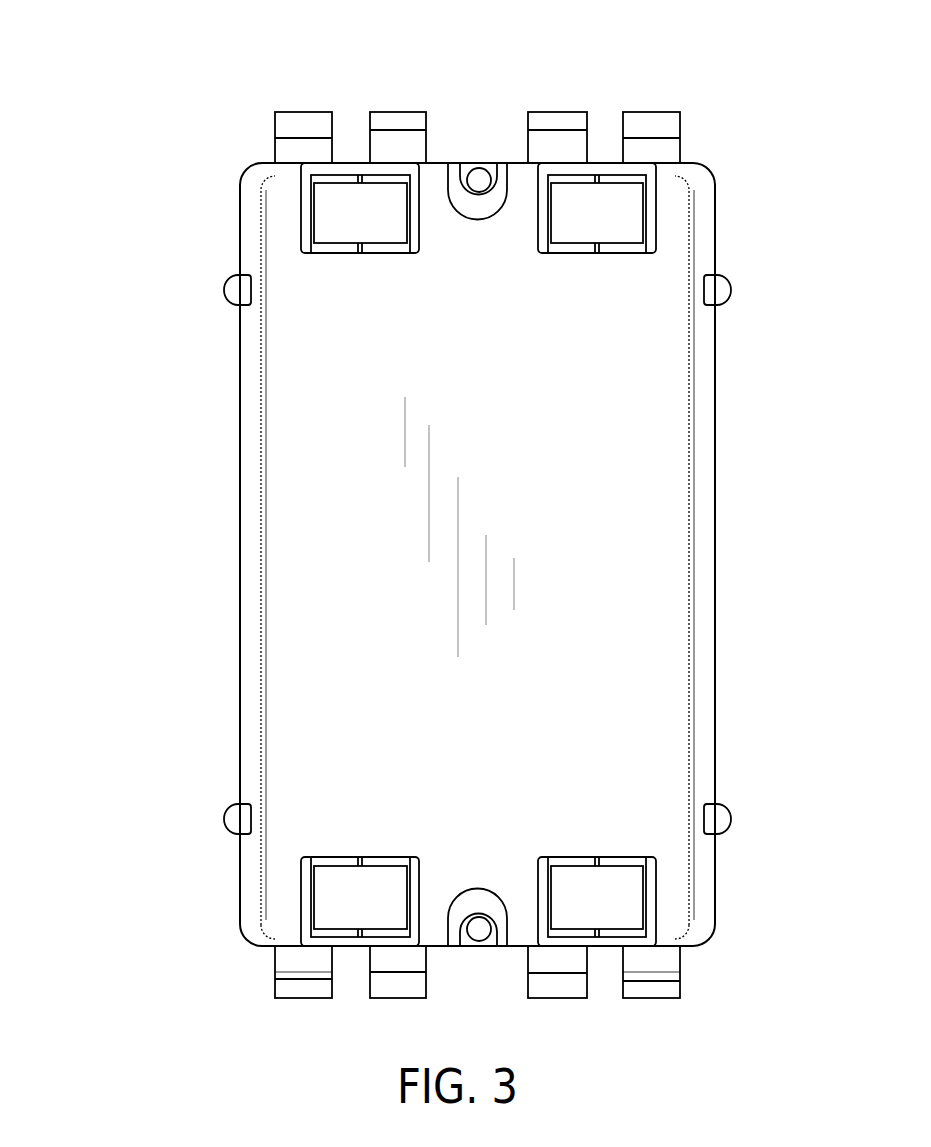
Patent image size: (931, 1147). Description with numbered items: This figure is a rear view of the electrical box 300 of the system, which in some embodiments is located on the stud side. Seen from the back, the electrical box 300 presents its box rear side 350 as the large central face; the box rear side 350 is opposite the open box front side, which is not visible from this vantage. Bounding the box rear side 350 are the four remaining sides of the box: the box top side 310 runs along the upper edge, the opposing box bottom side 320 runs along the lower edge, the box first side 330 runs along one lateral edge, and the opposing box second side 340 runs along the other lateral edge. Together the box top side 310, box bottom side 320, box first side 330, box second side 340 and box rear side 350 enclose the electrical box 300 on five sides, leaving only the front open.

The electrical box 300 is at (192, 153).
The box top side 310 is at (457, 163).
The box bottom side 320 is at (362, 946).
The box first side 330 is at (715, 587).
The box second side 340 is at (240, 480).
The box rear side 350 is at (322, 596).